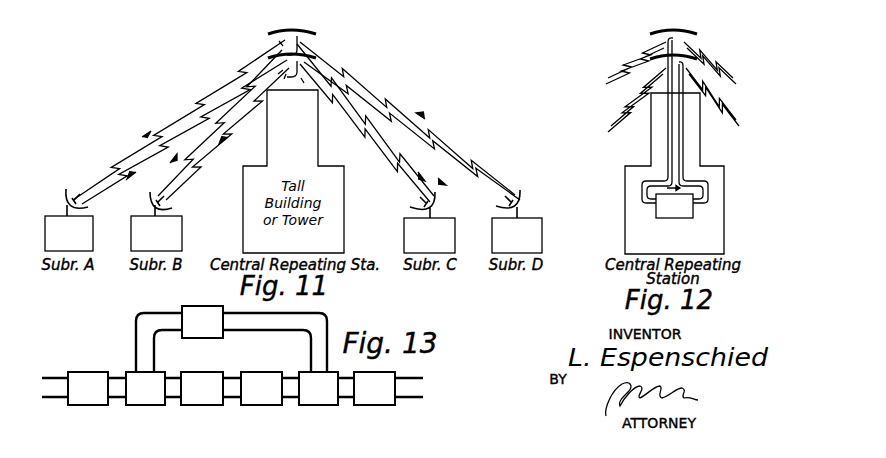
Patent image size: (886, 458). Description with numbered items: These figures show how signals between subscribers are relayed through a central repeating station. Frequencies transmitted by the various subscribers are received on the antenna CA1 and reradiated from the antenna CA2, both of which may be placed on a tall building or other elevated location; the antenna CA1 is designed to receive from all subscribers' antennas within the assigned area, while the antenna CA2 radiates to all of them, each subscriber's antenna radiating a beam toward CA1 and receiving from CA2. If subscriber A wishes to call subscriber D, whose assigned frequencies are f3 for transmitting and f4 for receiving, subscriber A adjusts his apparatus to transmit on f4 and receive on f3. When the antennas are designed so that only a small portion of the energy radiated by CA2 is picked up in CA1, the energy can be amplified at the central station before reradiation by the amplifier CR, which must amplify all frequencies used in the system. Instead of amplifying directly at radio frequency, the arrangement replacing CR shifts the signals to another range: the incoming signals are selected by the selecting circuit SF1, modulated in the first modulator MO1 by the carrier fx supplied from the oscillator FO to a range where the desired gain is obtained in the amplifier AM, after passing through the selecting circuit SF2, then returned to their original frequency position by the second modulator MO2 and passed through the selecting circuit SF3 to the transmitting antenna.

In FIG. 11, the receiving antenna CA1 is at (298, 38).
In FIG. 12, the receiving antenna CA1 is at (692, 37).
In FIG. 11, the reradiating antenna CA2 is at (299, 64).
In FIG. 12, the reradiating antenna CA2 is at (697, 63).
In FIG. 11, the transmitting frequency of subscriber D f3 is at (301, 123).
In FIG. 11, the receiving frequency of subscriber D f4 is at (263, 121).
In FIG. 12, the amplifier CR is at (666, 219).
In FIG. 13, the oscillator FO is at (182, 310).
In FIG. 13, the carrier frequency fx is at (199, 347).
In FIG. 13, the selecting circuit SF1 is at (88, 400).
In FIG. 13, the first modulator MO1 is at (145, 400).
In FIG. 13, the selecting circuit SF2 is at (202, 400).
In FIG. 13, the amplifier AM is at (261, 399).
In FIG. 13, the second modulator MO2 is at (318, 400).
In FIG. 13, the selecting circuit SF3 is at (374, 400).